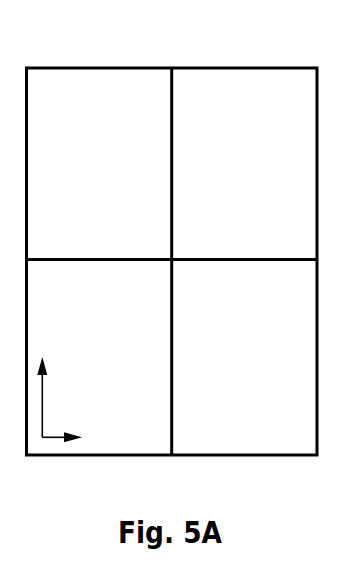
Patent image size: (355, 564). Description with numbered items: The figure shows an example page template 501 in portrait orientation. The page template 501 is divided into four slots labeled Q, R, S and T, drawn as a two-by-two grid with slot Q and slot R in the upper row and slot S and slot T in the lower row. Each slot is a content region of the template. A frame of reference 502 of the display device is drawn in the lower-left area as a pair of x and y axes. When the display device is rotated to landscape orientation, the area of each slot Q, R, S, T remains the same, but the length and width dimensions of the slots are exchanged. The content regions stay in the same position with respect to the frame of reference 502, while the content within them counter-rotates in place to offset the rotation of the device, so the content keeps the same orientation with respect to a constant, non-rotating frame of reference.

The page template 501 is at (190, 238).
The frame of reference 502 is at (44, 436).
The slot Q is at (120, 184).
The slot R is at (264, 184).
The slot S is at (118, 378).
The slot T is at (261, 378).